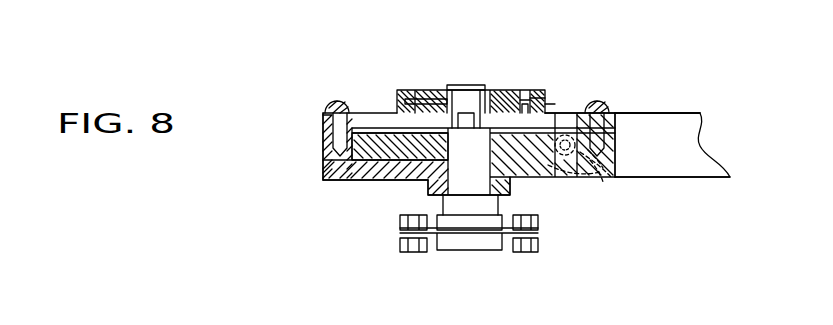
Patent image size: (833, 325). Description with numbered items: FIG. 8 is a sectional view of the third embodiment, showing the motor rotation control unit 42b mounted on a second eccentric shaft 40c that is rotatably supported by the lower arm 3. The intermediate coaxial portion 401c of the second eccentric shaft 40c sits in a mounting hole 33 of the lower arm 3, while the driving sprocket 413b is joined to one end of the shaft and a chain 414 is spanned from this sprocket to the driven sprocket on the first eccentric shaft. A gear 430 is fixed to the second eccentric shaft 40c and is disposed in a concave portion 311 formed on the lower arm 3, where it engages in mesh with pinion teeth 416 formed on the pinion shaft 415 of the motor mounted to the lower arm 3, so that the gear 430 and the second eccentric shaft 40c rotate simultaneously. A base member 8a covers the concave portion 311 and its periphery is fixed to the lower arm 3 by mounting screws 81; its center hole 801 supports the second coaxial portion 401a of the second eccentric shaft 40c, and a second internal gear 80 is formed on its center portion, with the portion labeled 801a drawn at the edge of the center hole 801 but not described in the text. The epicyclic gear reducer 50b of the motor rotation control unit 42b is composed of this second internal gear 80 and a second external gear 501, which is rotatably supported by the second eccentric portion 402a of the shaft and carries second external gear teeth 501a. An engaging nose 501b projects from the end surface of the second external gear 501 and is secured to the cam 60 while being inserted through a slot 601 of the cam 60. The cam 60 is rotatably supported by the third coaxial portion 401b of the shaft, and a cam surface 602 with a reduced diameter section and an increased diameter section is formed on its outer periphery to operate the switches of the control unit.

The base member 8a is at (625, 110).
The motor rotation control unit 42b is at (699, 104).
The epicyclic gear reducer 50b is at (600, 108).
The cam 60 is at (403, 100).
The cam surface 602 is at (396, 106).
The second internal gear 80 is at (323, 117).
The mounting screws 81 is at (600, 110).
The concave portion 311 is at (617, 155).
The second coaxial portion 401a is at (437, 91).
The third coaxial portion 401b is at (468, 96).
The intermediate coaxial portion 401c is at (428, 210).
The second eccentric portion 402a is at (443, 99).
The second external gear 501 is at (358, 159).
The second external gear teeth 501a is at (540, 108).
The engaging nose 501b is at (500, 92).
The slot 601 is at (524, 102).
The center hole 801 is at (378, 180).
The retaining ring flange 801a is at (548, 110).
The second eccentric shaft 40c is at (402, 232).
The driving sprocket 413b is at (447, 242).
The chain 414 is at (400, 246).
The gear 430 is at (541, 165).
The lower arm 3 is at (623, 168).
The mounting hole 33 is at (512, 189).
The pinion teeth 416 is at (603, 182).
The pinion shaft 415 is at (603, 168).